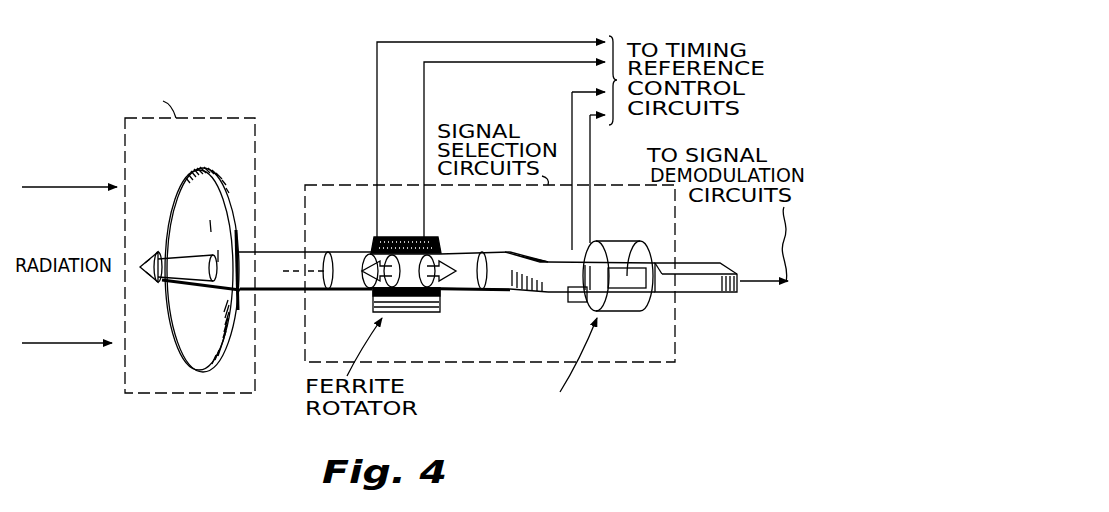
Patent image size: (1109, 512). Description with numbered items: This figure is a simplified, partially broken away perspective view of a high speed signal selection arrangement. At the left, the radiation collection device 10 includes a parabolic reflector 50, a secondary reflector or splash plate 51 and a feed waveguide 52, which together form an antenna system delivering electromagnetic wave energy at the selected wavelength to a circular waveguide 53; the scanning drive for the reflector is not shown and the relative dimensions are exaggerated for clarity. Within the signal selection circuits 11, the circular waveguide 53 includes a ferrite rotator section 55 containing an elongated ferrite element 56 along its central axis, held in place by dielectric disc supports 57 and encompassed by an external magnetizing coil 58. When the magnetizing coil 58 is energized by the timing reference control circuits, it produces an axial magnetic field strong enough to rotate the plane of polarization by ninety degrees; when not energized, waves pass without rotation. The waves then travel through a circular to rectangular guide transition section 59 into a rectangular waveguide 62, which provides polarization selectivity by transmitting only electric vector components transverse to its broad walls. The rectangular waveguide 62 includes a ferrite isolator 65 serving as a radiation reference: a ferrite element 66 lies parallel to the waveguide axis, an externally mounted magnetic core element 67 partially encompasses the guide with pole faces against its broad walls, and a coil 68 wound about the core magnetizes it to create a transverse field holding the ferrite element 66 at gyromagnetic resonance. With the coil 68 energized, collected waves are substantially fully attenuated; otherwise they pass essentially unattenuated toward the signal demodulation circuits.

The radiation collection device 10 is at (246, 118).
The signal selection circuits 11 is at (354, 185).
The parabolic reflector 50 is at (212, 176).
The secondary reflector or splash plate 51 is at (150, 258).
The feed waveguide 52 is at (178, 283).
The circular waveguide 53 is at (302, 252).
The ferrite rotator section 55 is at (412, 315).
The ferrite element 56 is at (376, 288).
The dielectric disc supports 57 is at (374, 258).
The magnetizing coil 58 is at (408, 237).
The circular to rectangular guide transition section 59 is at (498, 262).
The rectangular waveguide 62 is at (700, 263).
The ferrite isolator 65 is at (606, 260).
The ferrite element 66 is at (636, 290).
The magnetic core element 67 is at (614, 241).
The coil 68 is at (572, 302).